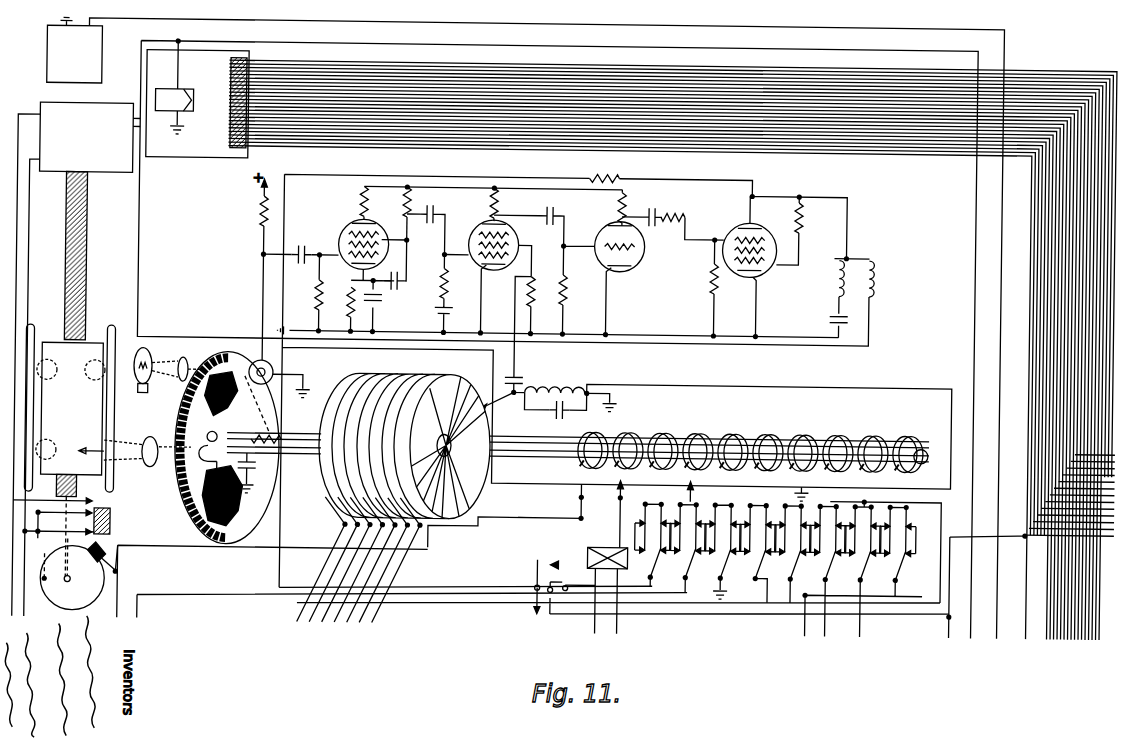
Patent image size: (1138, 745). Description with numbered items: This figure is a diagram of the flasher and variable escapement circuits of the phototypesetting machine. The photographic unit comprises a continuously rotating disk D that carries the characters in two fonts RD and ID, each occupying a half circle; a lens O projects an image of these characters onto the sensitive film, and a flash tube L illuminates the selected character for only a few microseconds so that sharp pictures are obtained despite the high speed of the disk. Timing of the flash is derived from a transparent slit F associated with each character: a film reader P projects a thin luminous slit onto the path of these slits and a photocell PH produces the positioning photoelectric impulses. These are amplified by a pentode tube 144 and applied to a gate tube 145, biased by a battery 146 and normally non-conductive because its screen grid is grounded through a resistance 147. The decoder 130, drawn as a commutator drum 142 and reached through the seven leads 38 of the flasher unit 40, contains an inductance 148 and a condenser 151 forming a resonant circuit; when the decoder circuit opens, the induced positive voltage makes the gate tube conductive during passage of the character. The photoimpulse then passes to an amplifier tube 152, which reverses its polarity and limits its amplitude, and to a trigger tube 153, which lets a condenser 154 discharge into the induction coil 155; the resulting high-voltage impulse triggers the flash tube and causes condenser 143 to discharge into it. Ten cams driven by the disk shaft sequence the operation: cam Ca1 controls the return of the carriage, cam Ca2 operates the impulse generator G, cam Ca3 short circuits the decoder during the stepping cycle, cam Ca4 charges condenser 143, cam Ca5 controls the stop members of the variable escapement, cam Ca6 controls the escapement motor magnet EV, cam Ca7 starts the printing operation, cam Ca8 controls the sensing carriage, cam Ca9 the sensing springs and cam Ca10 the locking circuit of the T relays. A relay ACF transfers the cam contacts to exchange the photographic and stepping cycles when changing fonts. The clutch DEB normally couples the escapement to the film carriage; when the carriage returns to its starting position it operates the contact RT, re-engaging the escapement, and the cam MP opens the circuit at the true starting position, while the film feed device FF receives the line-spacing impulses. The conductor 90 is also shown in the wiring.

The film feed device FF is at (75, 50).
The clutch DEB is at (90, 137).
The variable escapement motor magnet EV is at (198, 98).
The film reader P is at (152, 360).
The slit F is at (188, 362).
The lens O is at (151, 443).
The disk D is at (186, 500).
The photocell PH is at (280, 375).
The font RD is at (272, 396).
The font ID is at (272, 414).
The flash tube L is at (214, 445).
The condenser 143 is at (256, 473).
The pentode tube 144 is at (347, 224).
The gate tube 145 is at (485, 225).
The battery 146 is at (446, 310).
The resistance 147 is at (532, 300).
The amplifier tube 152 is at (652, 263).
The trigger tube 153 is at (755, 268).
The flasher unit 40 is at (652, 299).
The condenser 154 is at (828, 316).
The induction coil 155 is at (873, 276).
The inductance 148 is at (547, 388).
The condenser 151 is at (555, 411).
The commutator drum 142 is at (424, 379).
The decoder 130 is at (330, 476).
The leads 38 is at (345, 569).
The conductor 90 is at (506, 519).
The cam Ca1 is at (592, 444).
The cam Ca2 is at (628, 441).
The cam Ca3 is at (664, 430).
The cam Ca4 is at (698, 442).
The cam Ca5 is at (732, 430).
The cam Ca6 is at (768, 443).
The start cam Ca7 is at (801, 430).
The cam Ca8 is at (838, 443).
The cam Ca9 is at (872, 430).
The cam Ca10 is at (911, 445).
The impulse generator G is at (609, 513).
The relay ACF is at (573, 582).
The contact RT is at (110, 516).
The cam MP is at (73, 577).